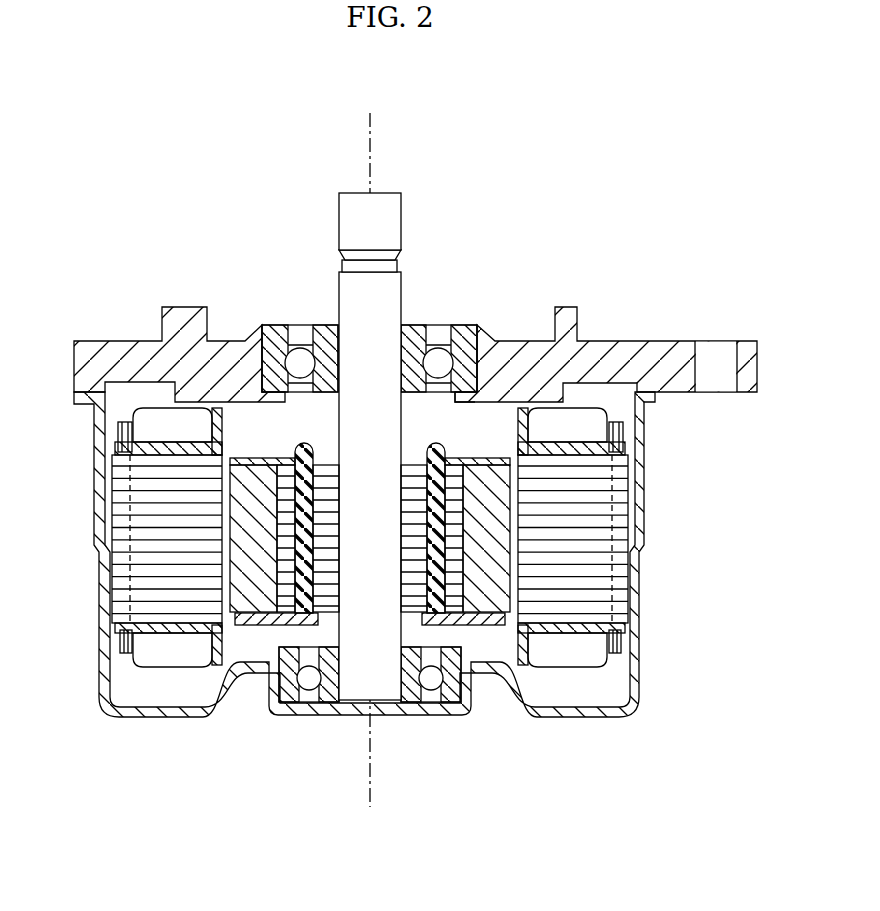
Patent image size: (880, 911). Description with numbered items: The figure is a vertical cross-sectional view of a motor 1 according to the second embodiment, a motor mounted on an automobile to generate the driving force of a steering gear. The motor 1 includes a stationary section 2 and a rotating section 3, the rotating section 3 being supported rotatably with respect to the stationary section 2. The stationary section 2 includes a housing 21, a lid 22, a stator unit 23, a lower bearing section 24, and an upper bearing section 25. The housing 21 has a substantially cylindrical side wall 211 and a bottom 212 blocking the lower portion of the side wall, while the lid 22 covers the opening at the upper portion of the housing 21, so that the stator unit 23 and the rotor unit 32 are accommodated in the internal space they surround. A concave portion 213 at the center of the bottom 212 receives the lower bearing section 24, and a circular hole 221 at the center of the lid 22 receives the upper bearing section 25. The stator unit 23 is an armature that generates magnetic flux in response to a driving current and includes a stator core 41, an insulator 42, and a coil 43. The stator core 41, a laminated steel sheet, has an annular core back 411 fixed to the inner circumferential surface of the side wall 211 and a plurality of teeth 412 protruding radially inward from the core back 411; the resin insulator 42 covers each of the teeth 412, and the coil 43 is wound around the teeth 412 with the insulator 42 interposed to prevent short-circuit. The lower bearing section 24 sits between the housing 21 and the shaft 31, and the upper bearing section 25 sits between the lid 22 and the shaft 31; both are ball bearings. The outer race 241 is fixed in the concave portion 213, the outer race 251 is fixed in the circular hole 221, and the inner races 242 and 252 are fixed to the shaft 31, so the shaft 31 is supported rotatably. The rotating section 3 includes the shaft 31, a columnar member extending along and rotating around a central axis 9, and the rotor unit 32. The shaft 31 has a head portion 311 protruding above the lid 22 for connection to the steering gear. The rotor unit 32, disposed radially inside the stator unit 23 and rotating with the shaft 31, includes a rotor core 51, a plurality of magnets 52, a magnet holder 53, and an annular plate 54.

The motor 1 is at (242, 168).
The stationary section 2 is at (686, 326).
The rotating section 3 is at (261, 441).
The central axis 9 is at (370, 133).
The housing 21 is at (607, 728).
The side wall 211 is at (640, 664).
The bottom 212 is at (565, 711).
The concave portion 213 is at (468, 690).
The lid 22 is at (595, 360).
The circular hole 221 is at (463, 345).
The stator unit 23 is at (98, 820).
The lower bearing section 24 is at (348, 775).
The outer race 241 is at (290, 688).
The inner race 242 is at (328, 688).
The upper bearing section 25 is at (327, 258).
The outer race 251 is at (277, 343).
The inner race 252 is at (327, 343).
The shaft 31 is at (383, 303).
The head portion 311 is at (383, 208).
The rotor unit 32 is at (712, 455).
The stator core 41 is at (155, 775).
The core back 411 is at (120, 578).
The teeth 412 is at (165, 580).
The insulator 42 is at (170, 630).
The coil 43 is at (192, 656).
The rotor core 51 is at (522, 502).
The magnets 52 is at (490, 542).
The magnet holder 53 is at (473, 610).
The annular plate 54 is at (505, 452).